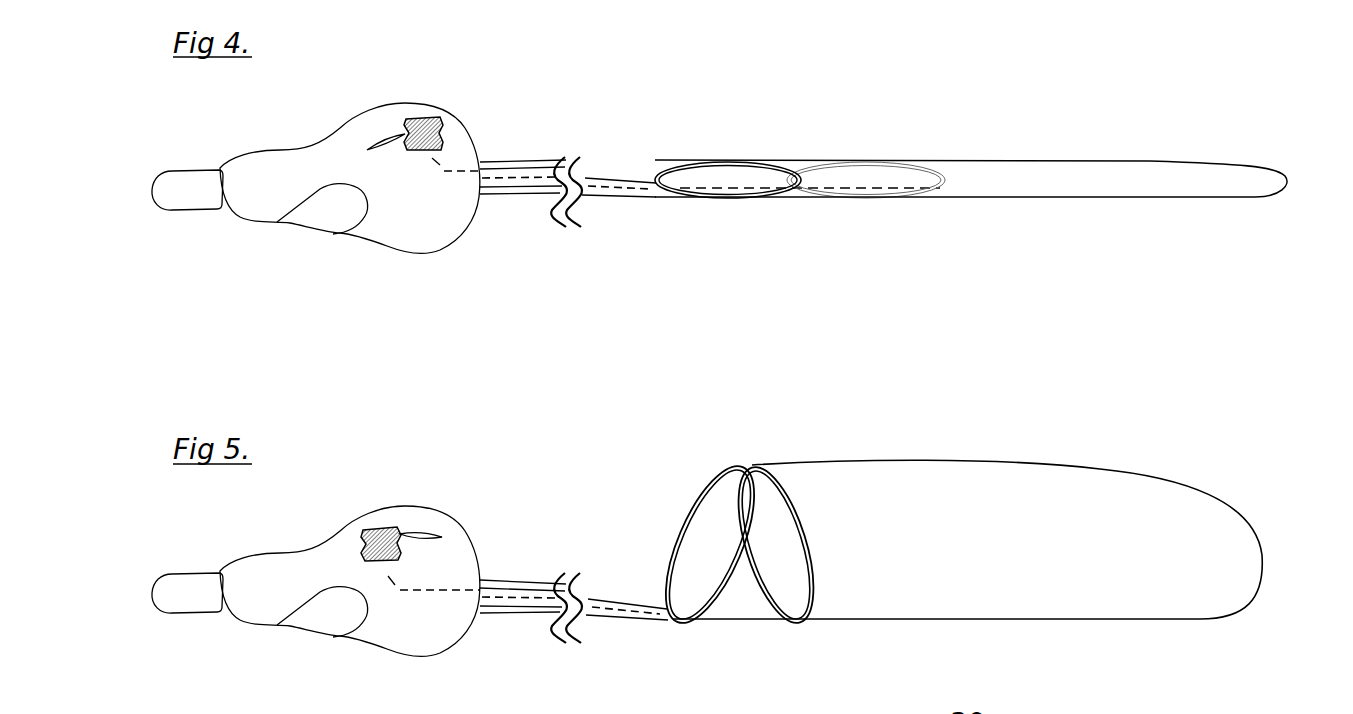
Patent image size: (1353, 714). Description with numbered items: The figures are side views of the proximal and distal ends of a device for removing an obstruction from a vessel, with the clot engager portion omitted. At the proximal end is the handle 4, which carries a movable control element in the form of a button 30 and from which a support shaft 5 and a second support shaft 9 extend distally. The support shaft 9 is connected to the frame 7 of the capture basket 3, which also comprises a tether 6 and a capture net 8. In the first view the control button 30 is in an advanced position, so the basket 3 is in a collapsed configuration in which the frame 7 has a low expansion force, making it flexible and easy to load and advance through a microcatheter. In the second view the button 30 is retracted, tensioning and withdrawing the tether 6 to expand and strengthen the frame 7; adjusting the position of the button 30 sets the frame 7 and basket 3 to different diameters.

In FIG. 4, the capture basket 3 is at (938, 128).
In FIG. 5, the capture basket 3 is at (895, 447).
In FIG. 4, the handle 4 is at (362, 102).
In FIG. 5, the handle 4 is at (340, 513).
In FIG. 4, the support shaft 5 is at (512, 162).
In FIG. 5, the support shaft 5 is at (510, 583).
In FIG. 4, the tether 6 is at (447, 175).
In FIG. 5, the tether 6 is at (425, 592).
In FIG. 4, the frame 7 is at (705, 162).
In FIG. 5, the frame 7 is at (707, 480).
In FIG. 4, the capture net 8 is at (1175, 190).
In FIG. 5, the capture net 8 is at (1077, 602).
In FIG. 4, the support shaft 9 is at (617, 200).
In FIG. 5, the support shaft 9 is at (617, 612).
In FIG. 4, the button 30 is at (415, 120).
In FIG. 5, the button 30 is at (392, 527).